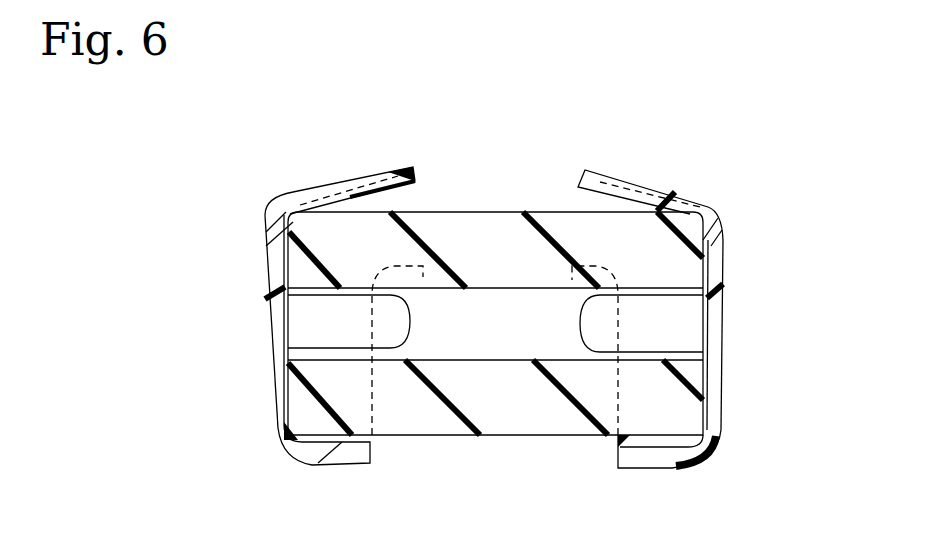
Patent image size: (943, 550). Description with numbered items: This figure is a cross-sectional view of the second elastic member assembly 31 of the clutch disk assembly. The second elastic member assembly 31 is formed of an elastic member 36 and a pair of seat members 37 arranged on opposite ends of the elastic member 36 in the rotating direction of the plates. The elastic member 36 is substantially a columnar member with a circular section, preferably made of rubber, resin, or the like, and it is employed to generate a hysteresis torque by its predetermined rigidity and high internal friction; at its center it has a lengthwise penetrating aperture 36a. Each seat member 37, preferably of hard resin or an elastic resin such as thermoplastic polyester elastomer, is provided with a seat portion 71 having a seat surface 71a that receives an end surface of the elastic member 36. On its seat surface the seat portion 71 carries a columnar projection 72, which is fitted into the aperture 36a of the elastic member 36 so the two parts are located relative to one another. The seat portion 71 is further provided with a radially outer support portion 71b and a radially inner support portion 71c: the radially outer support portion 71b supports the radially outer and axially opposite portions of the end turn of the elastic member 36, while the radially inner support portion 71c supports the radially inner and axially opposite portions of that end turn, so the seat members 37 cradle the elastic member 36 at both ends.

The second elastic member assembly 31 is at (678, 100).
The elastic member 36 is at (463, 247).
The aperture 36a is at (440, 348).
The seat member 37 is at (283, 175).
The seat portion 71 is at (273, 325).
The seat surface 71a is at (287, 268).
The radially outer support portion 71b is at (367, 175).
The radially inner support portion 71c is at (337, 457).
The columnar projection 72 is at (595, 340).